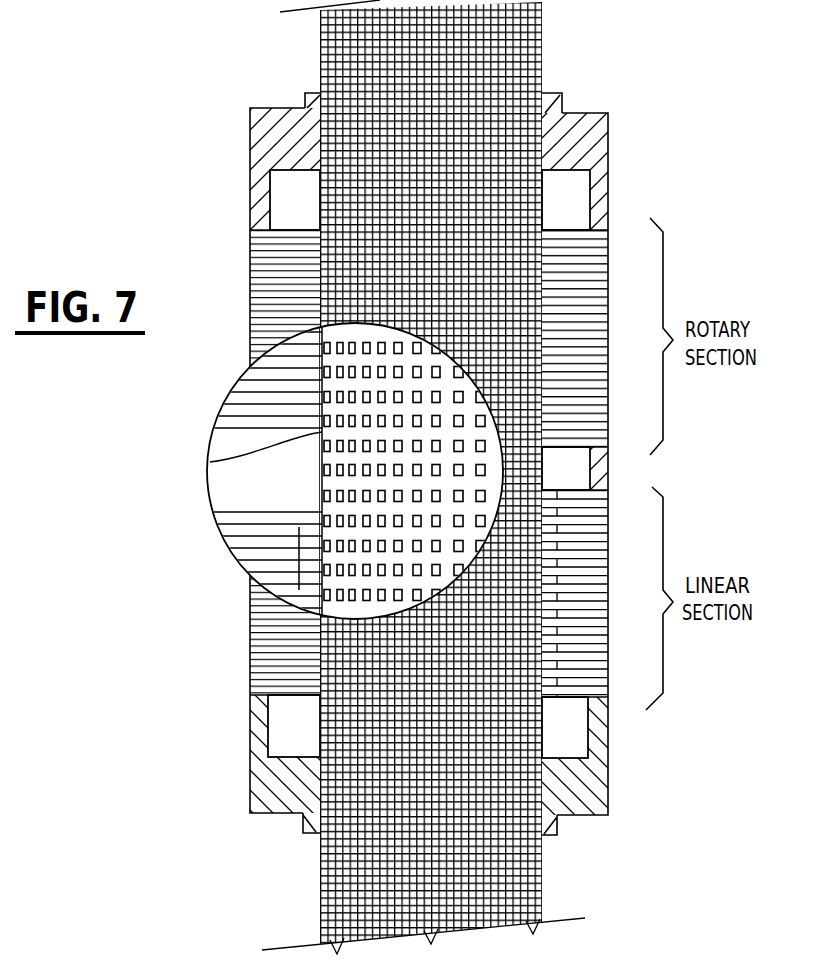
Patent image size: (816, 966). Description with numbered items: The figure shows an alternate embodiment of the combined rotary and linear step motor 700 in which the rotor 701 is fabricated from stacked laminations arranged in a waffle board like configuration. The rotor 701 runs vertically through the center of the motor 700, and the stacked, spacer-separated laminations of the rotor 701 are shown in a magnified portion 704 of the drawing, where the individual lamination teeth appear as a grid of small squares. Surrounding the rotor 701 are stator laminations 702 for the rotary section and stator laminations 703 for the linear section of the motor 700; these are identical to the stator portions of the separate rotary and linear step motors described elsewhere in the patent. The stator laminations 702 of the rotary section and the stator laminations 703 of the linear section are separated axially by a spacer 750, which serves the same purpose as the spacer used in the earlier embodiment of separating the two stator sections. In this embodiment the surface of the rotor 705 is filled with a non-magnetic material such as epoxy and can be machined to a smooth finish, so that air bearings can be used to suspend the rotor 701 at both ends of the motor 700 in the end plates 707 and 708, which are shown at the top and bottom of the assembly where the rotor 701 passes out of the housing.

The motor 700 is at (270, 815).
The rotor 701 is at (543, 35).
The stator laminations 702 is at (641, 307).
The stator laminations 703 is at (607, 610).
The magnified portion 704 is at (208, 490).
The surface of the rotor 705 is at (210, 463).
The end plate 707 is at (317, 93).
The end plate 708 is at (312, 837).
The spacer 750 is at (608, 466).